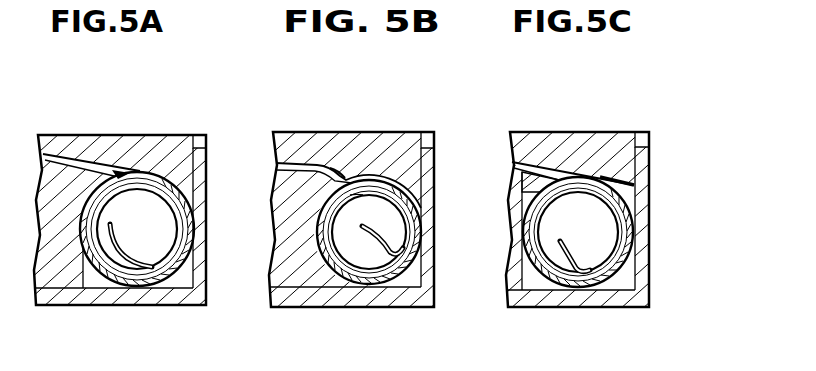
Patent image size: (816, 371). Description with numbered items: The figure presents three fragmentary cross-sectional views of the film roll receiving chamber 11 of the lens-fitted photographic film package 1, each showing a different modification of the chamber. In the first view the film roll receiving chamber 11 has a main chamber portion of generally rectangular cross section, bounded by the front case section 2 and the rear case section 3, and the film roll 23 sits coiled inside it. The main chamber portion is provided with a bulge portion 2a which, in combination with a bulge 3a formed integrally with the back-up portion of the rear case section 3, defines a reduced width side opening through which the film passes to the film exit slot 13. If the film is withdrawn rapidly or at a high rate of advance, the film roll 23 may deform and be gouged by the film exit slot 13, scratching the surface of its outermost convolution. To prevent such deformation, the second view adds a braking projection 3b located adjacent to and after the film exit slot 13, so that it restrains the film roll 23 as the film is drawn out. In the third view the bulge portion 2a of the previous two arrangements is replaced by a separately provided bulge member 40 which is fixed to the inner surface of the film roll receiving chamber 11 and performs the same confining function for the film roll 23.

In FIG. 5A, the film package 1 is at (197, 120).
In FIG. 5B, the film package 1 is at (425, 119).
In FIG. 5C, the film package 1 is at (640, 123).
In FIG. 5B, the front case section 2 is at (395, 300).
In FIG. 5C, the front case section 2 is at (648, 270).
In FIG. 5A, the bulge portion 2a is at (100, 180).
In FIG. 5B, the bulge portion 2a is at (348, 195).
In FIG. 5A, the rear case section 3 is at (173, 140).
In FIG. 5B, the rear case section 3 is at (400, 142).
In FIG. 5C, the rear case section 3 is at (613, 138).
In FIG. 5A, the bulge 3a is at (191, 192).
In FIG. 5B, the braking projection 3b is at (335, 170).
In FIG. 5A, the film roll receiving chamber 11 is at (147, 253).
In FIG. 5B, the film roll receiving chamber 11 is at (367, 267).
In FIG. 5C, the film roll receiving chamber 11 is at (532, 282).
In FIG. 5A, the film exit slot 13 is at (127, 170).
In FIG. 5B, the film exit slot 13 is at (363, 177).
In FIG. 5C, the film exit slot 13 is at (552, 172).
In FIG. 5A, the film roll 23 is at (188, 227).
In FIG. 5B, the film roll 23 is at (417, 232).
In FIG. 5C, the film roll 23 is at (625, 233).
In FIG. 5C, the bulge member 40 is at (543, 212).